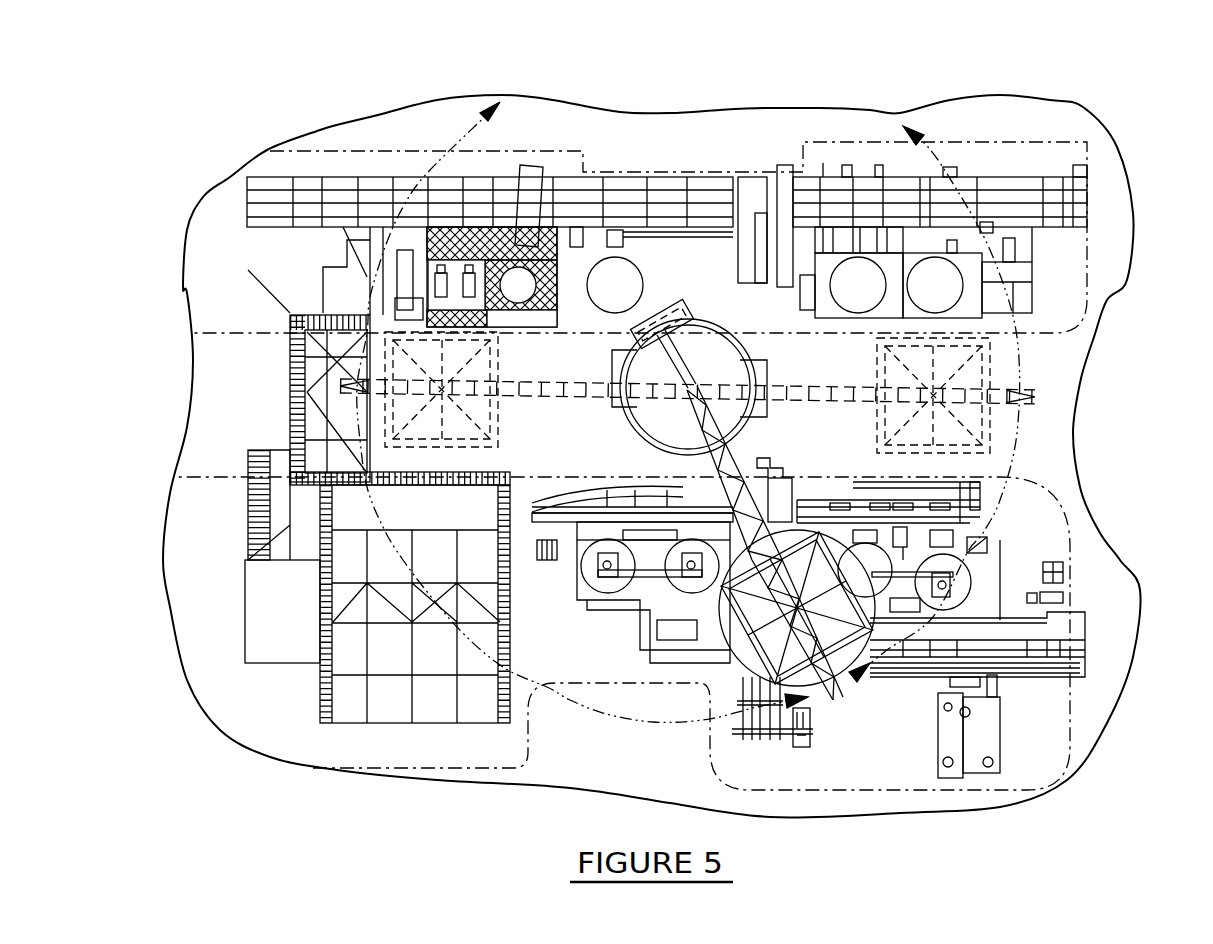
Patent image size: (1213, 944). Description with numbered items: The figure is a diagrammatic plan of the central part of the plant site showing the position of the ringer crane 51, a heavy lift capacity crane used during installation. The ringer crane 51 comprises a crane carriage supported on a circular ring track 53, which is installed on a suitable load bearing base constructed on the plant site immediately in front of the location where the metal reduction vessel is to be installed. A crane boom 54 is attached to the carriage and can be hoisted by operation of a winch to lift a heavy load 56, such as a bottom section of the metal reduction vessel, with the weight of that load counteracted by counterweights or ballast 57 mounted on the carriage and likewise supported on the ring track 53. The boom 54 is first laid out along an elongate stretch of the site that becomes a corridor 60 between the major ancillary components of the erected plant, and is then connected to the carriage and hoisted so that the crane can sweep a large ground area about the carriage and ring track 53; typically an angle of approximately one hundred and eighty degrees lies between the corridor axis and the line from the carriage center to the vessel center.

The ringer crane 51 is at (742, 302).
The ring track 53 is at (700, 325).
The crane boom 54 is at (525, 425).
The heavy load 56 is at (735, 637).
The counterweights or ballast 57 is at (690, 335).
The corridor 60 is at (565, 432).